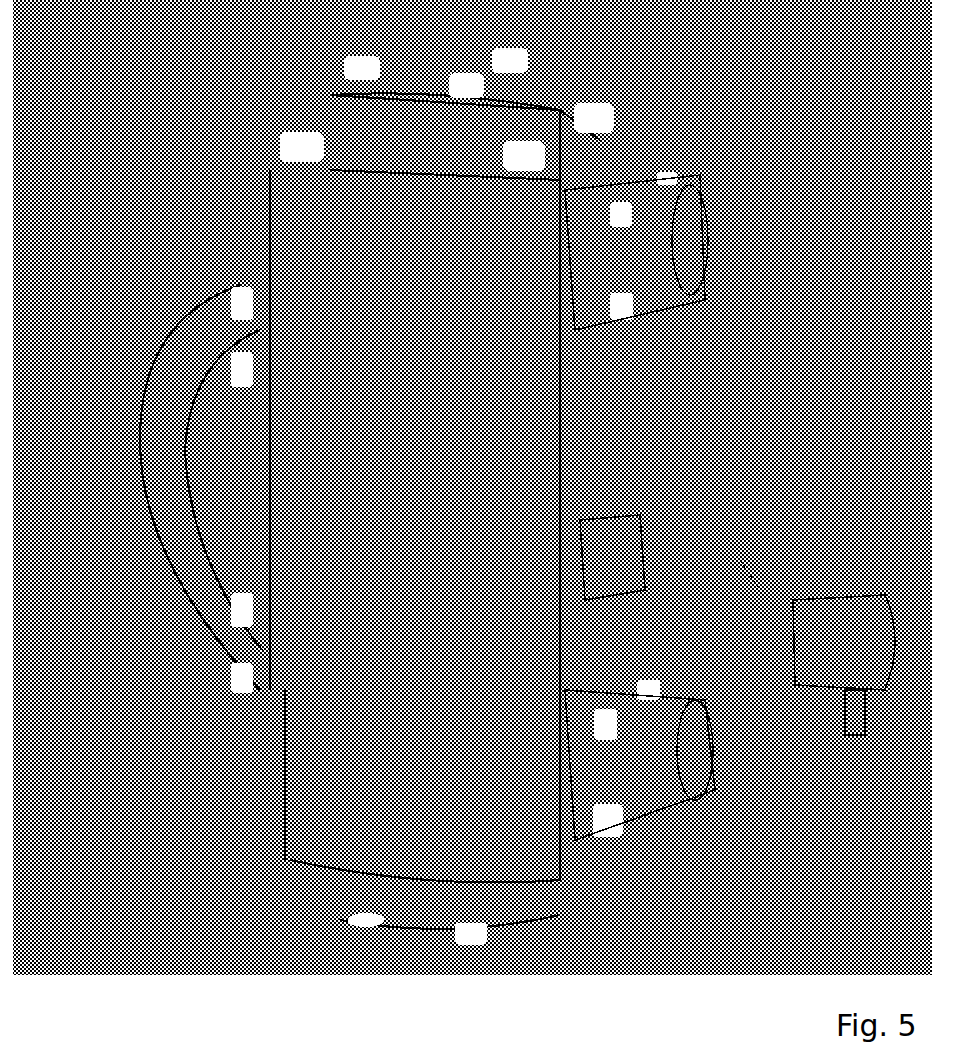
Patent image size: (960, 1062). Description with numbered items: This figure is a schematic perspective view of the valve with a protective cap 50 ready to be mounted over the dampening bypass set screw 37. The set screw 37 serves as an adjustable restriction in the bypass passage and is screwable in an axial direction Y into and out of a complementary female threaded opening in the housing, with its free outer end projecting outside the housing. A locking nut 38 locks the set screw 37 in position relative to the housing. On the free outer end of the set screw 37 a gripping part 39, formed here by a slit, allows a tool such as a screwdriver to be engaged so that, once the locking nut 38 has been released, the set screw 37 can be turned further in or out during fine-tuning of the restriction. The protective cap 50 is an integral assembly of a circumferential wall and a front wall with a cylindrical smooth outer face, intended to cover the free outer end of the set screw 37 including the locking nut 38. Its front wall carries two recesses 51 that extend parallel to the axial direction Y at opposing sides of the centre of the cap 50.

The dampening bypass set screw 37 is at (650, 560).
The locking nut 38 is at (628, 560).
The gripping part 39 is at (688, 668).
The protective cap 50 is at (850, 578).
The recesses 51 is at (853, 700).
The axial direction Y is at (748, 572).